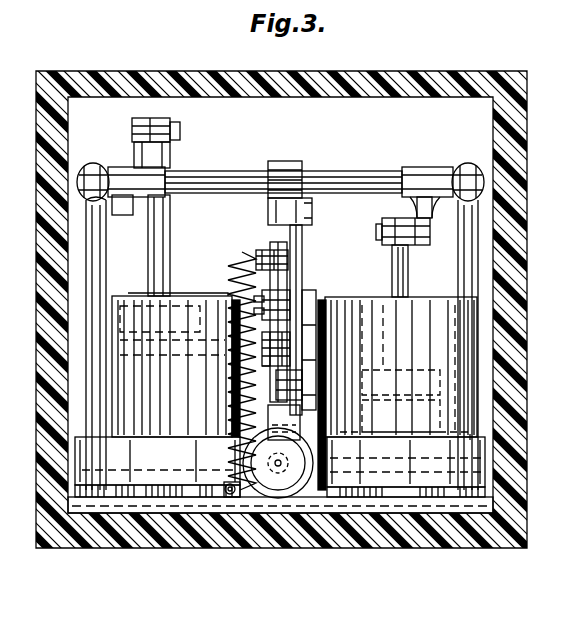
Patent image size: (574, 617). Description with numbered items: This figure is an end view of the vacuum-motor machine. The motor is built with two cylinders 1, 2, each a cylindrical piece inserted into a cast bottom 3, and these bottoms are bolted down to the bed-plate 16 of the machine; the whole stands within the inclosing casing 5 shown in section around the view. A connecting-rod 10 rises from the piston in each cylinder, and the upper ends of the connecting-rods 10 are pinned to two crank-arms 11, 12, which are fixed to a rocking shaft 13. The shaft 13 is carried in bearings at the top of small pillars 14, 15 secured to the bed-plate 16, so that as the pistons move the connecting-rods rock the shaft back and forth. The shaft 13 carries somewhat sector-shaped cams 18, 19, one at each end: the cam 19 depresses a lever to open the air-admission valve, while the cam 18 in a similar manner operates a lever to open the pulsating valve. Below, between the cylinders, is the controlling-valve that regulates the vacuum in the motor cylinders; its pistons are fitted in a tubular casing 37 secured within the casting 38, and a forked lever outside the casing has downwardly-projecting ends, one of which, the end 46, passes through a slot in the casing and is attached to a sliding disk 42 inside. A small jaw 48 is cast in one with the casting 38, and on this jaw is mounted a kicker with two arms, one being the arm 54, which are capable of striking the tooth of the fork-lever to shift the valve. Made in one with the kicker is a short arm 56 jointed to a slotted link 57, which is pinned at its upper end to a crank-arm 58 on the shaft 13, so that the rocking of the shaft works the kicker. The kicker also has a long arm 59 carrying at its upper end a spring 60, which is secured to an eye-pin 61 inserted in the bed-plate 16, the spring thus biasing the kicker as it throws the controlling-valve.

The cylinder 1 is at (176, 365).
The cylinder 2 is at (397, 393).
The cast bottom 3 is at (280, 467).
The casing frame 5 is at (37, 377).
The connecting-rod 10 is at (171, 253).
The crank-arm 11 is at (136, 157).
The crank-arm 12 is at (425, 195).
The rocking shaft 13 is at (352, 172).
The pillar 14 is at (98, 258).
The pillar 15 is at (466, 284).
The bed-plate 16 is at (340, 507).
The cam 18 is at (420, 250).
The cam 19 is at (126, 214).
The tubular casing 37 is at (280, 492).
The casting 38 is at (266, 430).
The sliding disk 42 is at (278, 463).
The downwardly-projecting end 46 is at (300, 415).
The small jaw 48 is at (310, 405).
The kicker arm 54 is at (304, 276).
The short arm 56 is at (262, 376).
The slotted link 57 is at (318, 268).
The crank-arm 58 is at (285, 166).
The long arm 59 is at (282, 334).
The spring 60 is at (244, 290).
The eye-pin 61 is at (228, 497).